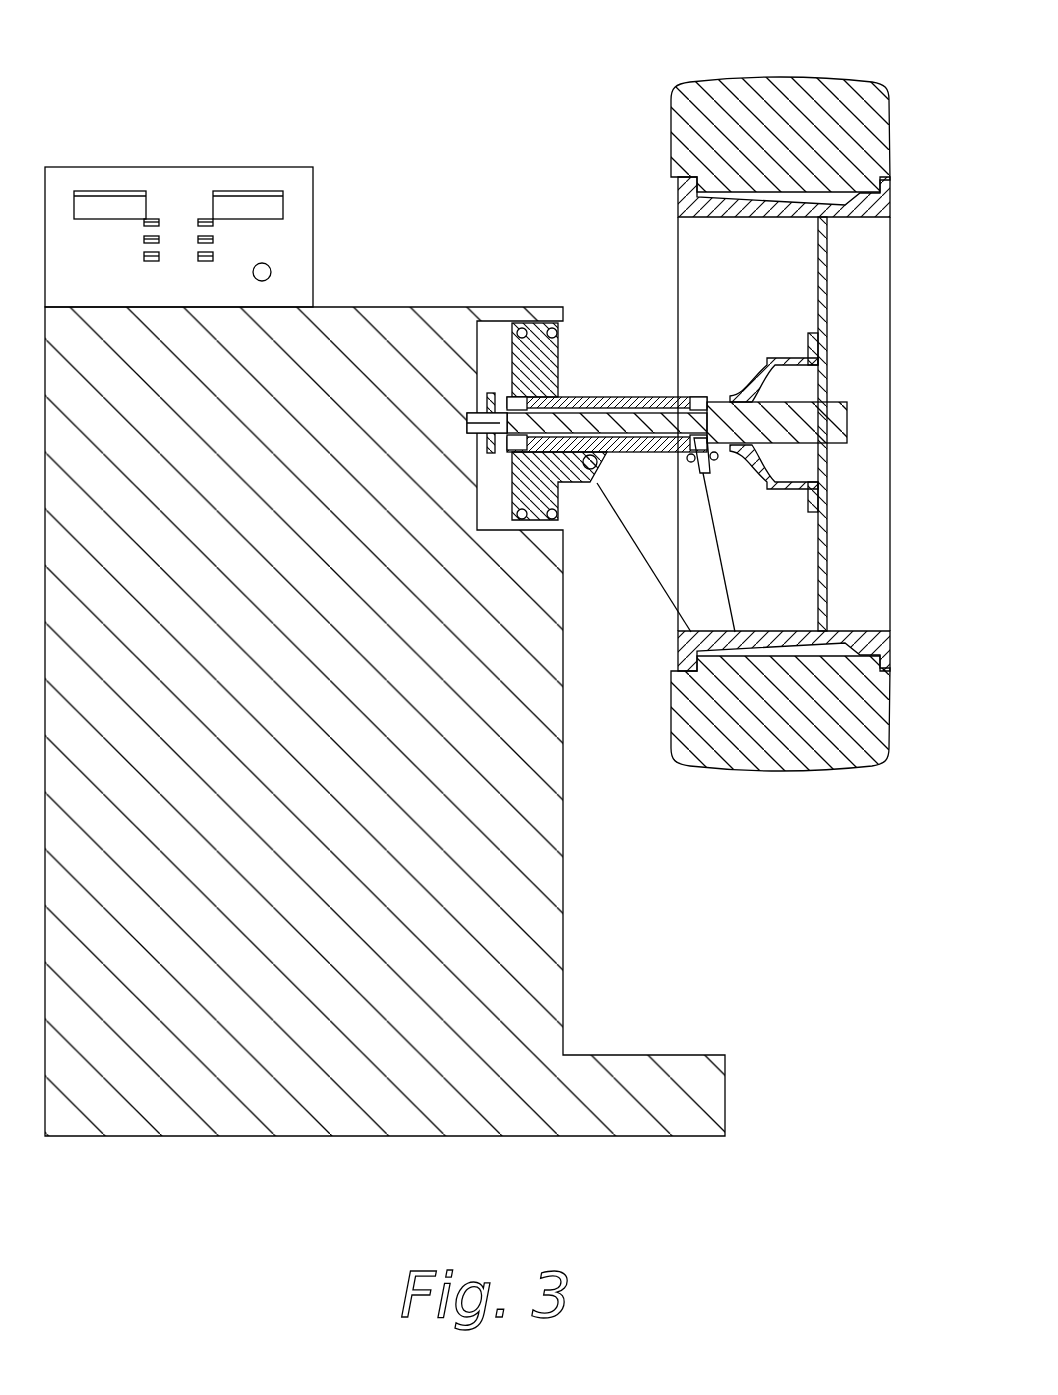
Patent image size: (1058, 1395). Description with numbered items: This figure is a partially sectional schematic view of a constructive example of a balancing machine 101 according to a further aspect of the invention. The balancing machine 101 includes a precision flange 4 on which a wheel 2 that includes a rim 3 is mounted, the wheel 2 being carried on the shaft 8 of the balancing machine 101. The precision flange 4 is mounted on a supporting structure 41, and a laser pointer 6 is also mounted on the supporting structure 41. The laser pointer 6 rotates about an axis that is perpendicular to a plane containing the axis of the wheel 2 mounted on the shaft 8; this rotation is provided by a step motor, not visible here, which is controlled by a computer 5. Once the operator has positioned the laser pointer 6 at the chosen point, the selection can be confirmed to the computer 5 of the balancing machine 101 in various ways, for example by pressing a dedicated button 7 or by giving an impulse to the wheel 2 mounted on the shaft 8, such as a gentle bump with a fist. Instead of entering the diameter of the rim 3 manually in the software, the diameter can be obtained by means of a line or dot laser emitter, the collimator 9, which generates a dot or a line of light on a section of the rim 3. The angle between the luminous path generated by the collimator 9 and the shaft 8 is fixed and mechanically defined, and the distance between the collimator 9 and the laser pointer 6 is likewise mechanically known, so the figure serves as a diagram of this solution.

The balancing machine 101 is at (541, 114).
The wheel 2 is at (898, 116).
The rim 3 is at (737, 217).
The precision flange 4 is at (847, 407).
The computer 5 is at (184, 183).
The laser pointer 6 is at (590, 470).
The dedicated button 7 is at (270, 266).
The shaft 8 is at (490, 393).
The collimator 9 is at (713, 470).
The supporting structure 41 is at (615, 395).